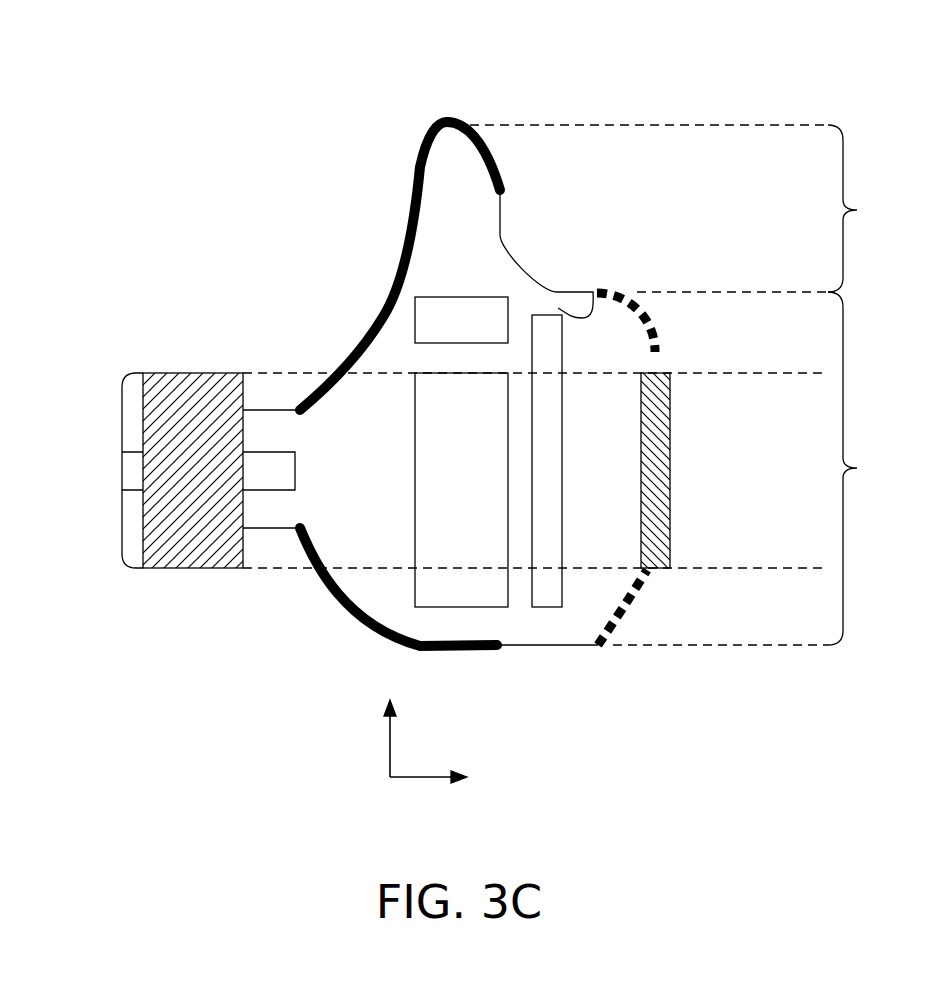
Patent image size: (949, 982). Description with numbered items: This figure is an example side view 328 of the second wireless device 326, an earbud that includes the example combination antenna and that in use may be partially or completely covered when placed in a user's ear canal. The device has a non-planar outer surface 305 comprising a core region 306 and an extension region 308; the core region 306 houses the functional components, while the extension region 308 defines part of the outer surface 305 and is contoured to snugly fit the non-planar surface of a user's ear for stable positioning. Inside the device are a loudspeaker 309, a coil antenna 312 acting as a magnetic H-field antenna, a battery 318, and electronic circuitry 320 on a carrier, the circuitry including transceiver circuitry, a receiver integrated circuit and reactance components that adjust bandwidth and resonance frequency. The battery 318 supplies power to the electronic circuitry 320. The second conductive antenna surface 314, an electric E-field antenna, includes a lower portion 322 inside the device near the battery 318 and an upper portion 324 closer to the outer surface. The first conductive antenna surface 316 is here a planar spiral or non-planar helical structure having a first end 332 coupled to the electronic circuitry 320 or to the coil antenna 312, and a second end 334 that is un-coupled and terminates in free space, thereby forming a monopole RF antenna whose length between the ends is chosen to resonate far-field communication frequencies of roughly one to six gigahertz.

The non-planar outer surface 305 is at (512, 254).
The core region 306 is at (573, 468).
The extension region 308 is at (687, 208).
The loudspeaker 309 is at (190, 372).
The coil antenna 312 is at (461, 320).
The second conductive antenna surface 314 is at (500, 162).
The first conductive antenna surface 316 is at (658, 350).
The battery 318 is at (461, 490).
The electronic circuitry 320 is at (562, 466).
The lower portion 322 is at (420, 640).
The upper portion 324 is at (447, 118).
The second wireless device 326 is at (231, 75).
The side view 328 is at (391, 738).
The first end 332 is at (594, 287).
The second end 334 is at (658, 578).